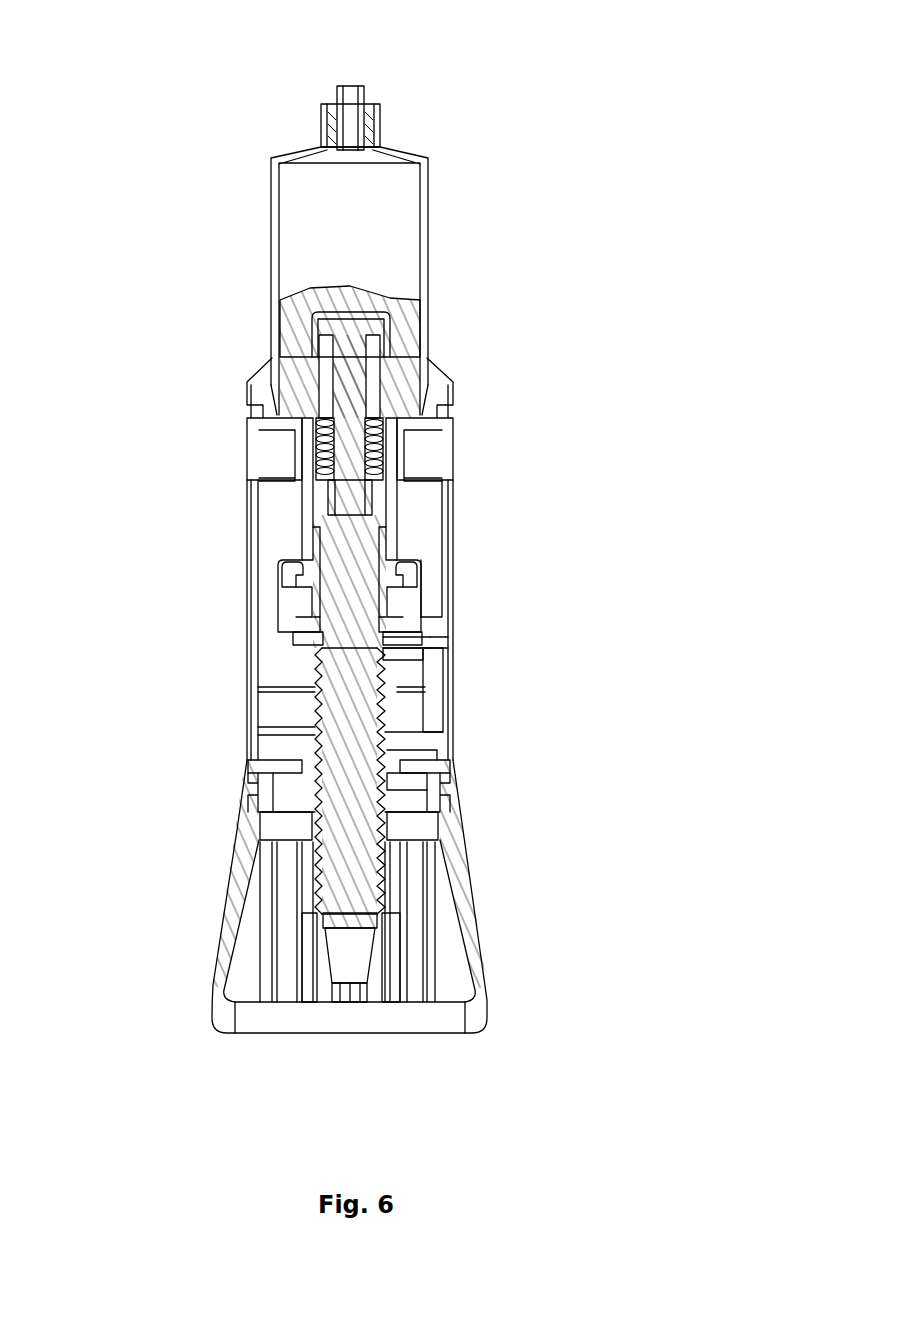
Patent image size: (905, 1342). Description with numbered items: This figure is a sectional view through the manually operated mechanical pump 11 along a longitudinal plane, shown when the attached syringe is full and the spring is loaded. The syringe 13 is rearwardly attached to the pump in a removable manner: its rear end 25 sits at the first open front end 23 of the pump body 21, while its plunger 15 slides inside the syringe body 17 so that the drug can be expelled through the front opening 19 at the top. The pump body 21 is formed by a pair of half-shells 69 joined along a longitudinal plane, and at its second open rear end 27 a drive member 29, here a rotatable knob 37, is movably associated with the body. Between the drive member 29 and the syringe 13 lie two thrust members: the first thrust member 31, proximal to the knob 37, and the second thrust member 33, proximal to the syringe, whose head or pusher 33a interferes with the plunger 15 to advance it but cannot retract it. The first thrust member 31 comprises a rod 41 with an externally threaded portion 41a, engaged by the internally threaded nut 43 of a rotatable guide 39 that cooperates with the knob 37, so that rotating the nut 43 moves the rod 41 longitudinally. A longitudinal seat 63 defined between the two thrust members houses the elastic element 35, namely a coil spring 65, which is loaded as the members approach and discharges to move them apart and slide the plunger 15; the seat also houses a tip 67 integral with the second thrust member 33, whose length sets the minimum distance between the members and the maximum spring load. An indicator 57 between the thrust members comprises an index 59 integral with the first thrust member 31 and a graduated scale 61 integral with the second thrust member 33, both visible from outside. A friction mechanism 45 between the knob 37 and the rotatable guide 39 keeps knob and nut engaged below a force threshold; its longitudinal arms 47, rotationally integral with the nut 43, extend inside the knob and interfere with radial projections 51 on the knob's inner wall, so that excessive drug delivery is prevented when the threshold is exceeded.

The manually operated mechanical pump 11 is at (190, 1040).
The syringe 13 is at (432, 210).
The plunger 15 is at (320, 286).
The syringe body 17 is at (428, 183).
The front opening 19 is at (346, 88).
The pump body 21 is at (456, 593).
The first open front end 23 is at (297, 433).
The rear end of the syringe 25 is at (443, 388).
The second open rear end 27 is at (314, 752).
The drive member 29 is at (481, 938).
The first thrust member 31 is at (313, 672).
The second thrust member 33 is at (398, 526).
The head or pusher 33a is at (325, 322).
The elastic element 35 is at (325, 410).
The knob 37 is at (240, 915).
The rotatable guide 39 is at (255, 742).
The rod 41 is at (360, 720).
The externally threaded portion 41a is at (258, 789).
The internally threaded nut 43 is at (422, 750).
The friction mechanism 45 is at (373, 977).
The longitudinal arms 47 is at (336, 945).
The radial projections 51 is at (438, 915).
The indicator 57 is at (434, 627).
The index 59 is at (422, 661).
The graduated scale 61 is at (444, 690).
The longitudinal seat 63 is at (366, 354).
The coil spring 65 is at (374, 450).
The tip 67 is at (356, 497).
The half-shells 69 is at (455, 555).